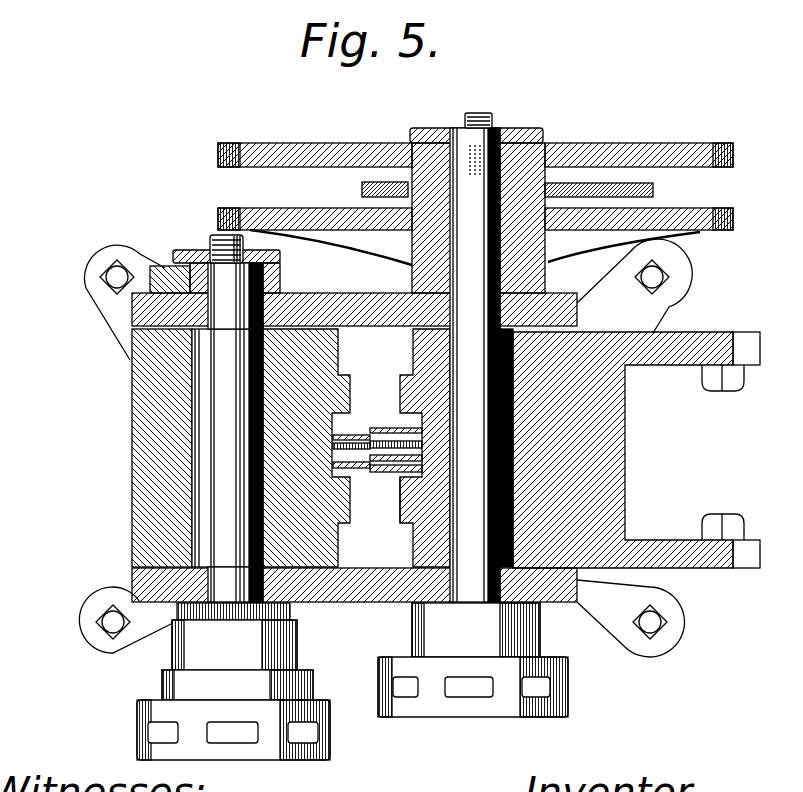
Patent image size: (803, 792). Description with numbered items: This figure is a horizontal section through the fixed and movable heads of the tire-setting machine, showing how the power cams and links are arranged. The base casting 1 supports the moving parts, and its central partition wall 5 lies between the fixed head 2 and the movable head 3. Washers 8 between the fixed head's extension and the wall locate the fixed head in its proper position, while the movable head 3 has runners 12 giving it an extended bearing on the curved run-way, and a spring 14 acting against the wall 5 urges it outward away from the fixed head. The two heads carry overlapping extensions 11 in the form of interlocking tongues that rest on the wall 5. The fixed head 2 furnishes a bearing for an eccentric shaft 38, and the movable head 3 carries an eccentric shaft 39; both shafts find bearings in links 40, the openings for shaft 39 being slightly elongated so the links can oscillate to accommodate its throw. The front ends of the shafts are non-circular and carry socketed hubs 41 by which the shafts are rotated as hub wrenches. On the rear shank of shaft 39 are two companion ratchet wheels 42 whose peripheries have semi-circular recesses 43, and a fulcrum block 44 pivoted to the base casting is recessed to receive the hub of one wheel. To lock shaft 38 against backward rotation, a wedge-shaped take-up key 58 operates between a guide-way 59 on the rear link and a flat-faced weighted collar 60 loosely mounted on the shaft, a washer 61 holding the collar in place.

The base casting 1 is at (375, 448).
The fixed head 2 is at (150, 425).
The movable head 3 is at (600, 440).
The central partition wall 5 is at (400, 518).
The washers 8 is at (333, 450).
The overlapping extensions 11 is at (377, 452).
The runners 12 is at (692, 352).
The spring 14 is at (418, 464).
The eccentric shaft 38 is at (227, 418).
The eccentric shaft 39 is at (481, 357).
The links 40 is at (338, 300).
The socketed hubs 41 is at (352, 681).
The ratchet wheels 42 is at (270, 222).
The semi-circular recesses 43 is at (722, 212).
The fulcrum block 44 is at (384, 185).
The take-up key 58 is at (140, 293).
The guide-way 59 is at (147, 272).
The weighted collar 60 is at (282, 283).
The washer 61 is at (188, 250).